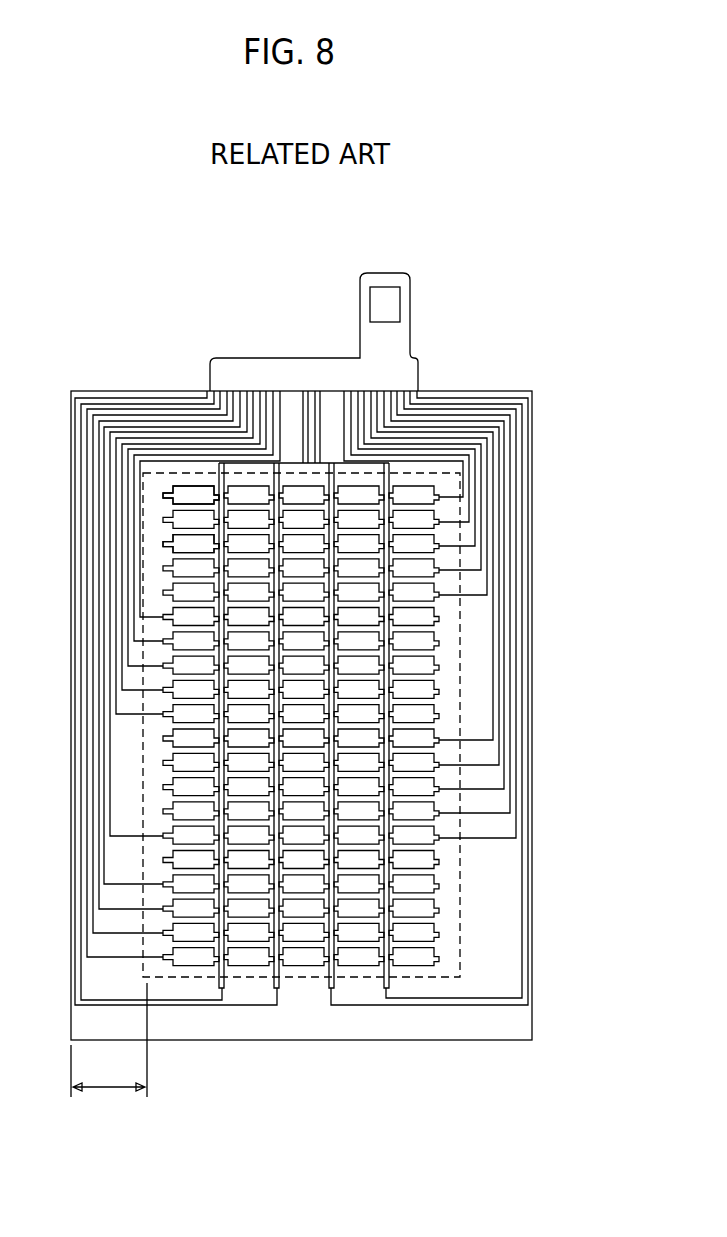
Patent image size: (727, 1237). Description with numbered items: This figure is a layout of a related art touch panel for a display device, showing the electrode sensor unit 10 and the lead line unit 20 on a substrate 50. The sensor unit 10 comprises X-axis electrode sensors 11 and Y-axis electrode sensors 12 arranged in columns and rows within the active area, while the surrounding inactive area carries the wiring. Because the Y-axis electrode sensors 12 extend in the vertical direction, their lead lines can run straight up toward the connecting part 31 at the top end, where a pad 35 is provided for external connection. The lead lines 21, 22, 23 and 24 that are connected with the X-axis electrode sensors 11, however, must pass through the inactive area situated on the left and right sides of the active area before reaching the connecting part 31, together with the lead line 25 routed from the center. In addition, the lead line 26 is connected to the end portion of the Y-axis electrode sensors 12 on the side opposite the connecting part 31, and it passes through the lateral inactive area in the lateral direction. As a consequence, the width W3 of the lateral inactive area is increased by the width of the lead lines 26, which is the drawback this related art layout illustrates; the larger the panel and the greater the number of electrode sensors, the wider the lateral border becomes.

The touch sensing electrode unit 10 is at (33, 478).
The X-axis electrode sensor 11 is at (219, 486).
The Y-axis electrode sensor 12 is at (182, 543).
The lead line 20 is at (580, 497).
The lead line 21 is at (483, 547).
The lead line 22 is at (140, 632).
The lead line 23 is at (506, 776).
The lead line 24 is at (173, 830).
The fifth wiring line 25 is at (322, 430).
The lead line 26 is at (532, 957).
The connecting part 31 is at (290, 366).
The pad 35 is at (386, 298).
The substrate 50 is at (518, 1022).
The width of the lateral inactive area W3 is at (109, 1040).